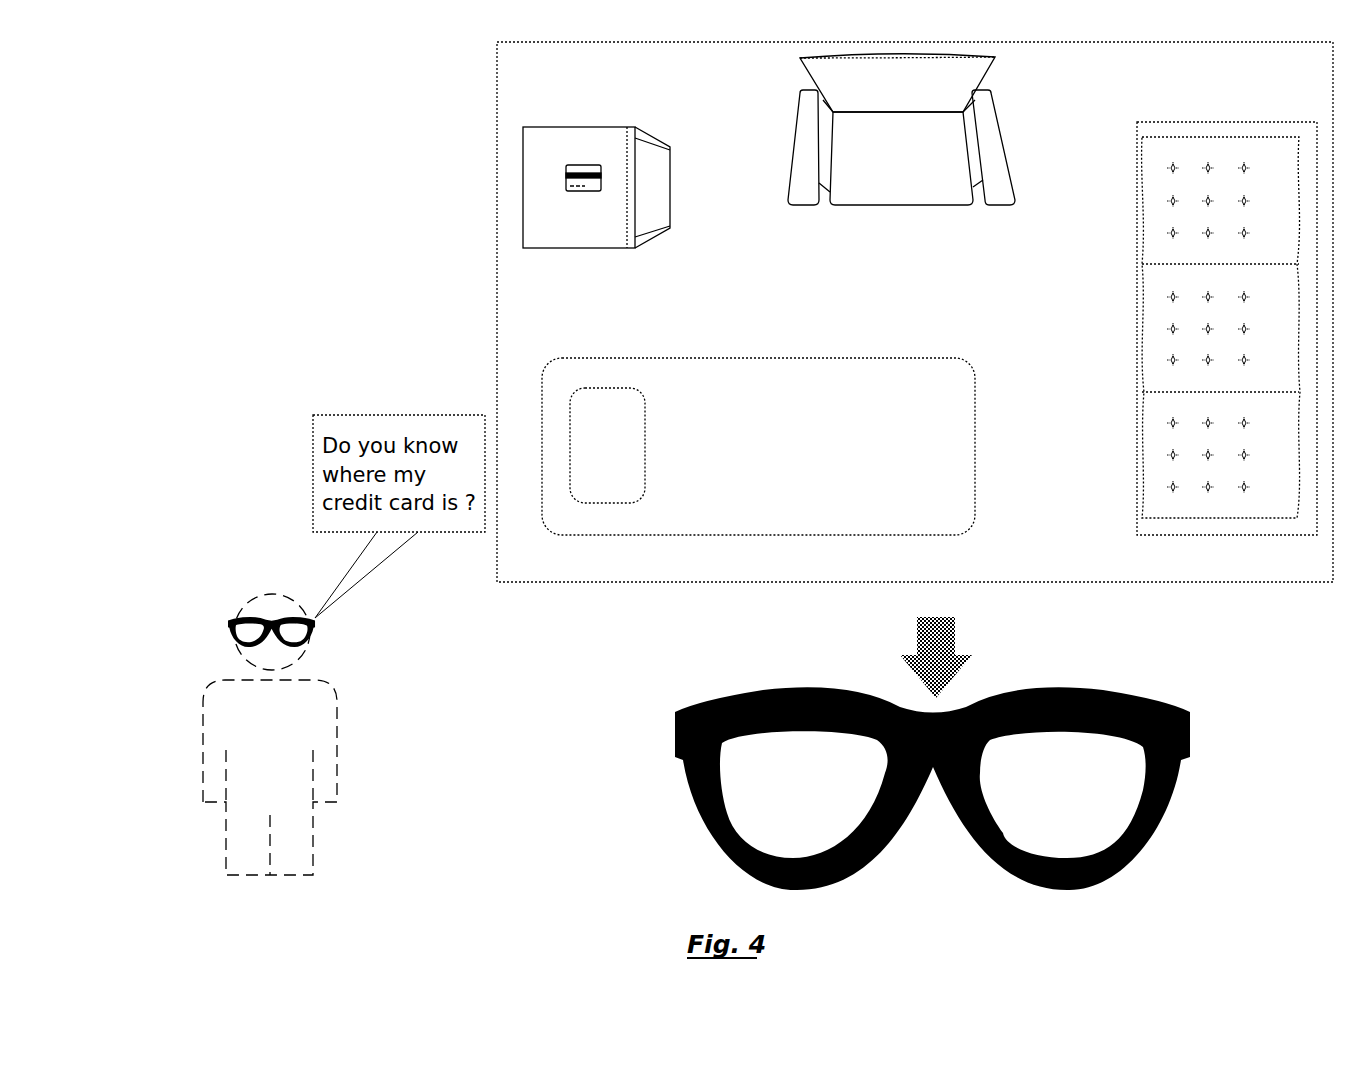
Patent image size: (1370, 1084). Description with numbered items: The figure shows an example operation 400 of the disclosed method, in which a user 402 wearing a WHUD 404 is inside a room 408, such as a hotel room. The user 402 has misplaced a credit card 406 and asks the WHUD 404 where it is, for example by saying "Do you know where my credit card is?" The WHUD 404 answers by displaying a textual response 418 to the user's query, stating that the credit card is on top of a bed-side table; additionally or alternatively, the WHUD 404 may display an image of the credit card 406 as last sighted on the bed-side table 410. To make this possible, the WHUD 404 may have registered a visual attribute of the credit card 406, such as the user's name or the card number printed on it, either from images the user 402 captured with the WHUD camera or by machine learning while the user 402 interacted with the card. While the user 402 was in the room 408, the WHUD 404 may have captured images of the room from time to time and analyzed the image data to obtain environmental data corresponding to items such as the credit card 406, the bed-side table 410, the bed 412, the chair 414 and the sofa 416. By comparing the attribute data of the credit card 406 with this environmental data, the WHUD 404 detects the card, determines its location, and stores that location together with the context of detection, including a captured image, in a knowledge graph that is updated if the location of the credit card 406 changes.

The example operation 400 is at (424, 78).
The user 402 is at (337, 730).
The WHUD 404 is at (227, 630).
The credit card 406 is at (578, 164).
The room 408 is at (497, 248).
The bed-side table 410 is at (662, 194).
The bed 412 is at (822, 358).
The chair 414 is at (992, 125).
The sofa 416 is at (1137, 345).
The response 418 is at (1132, 788).